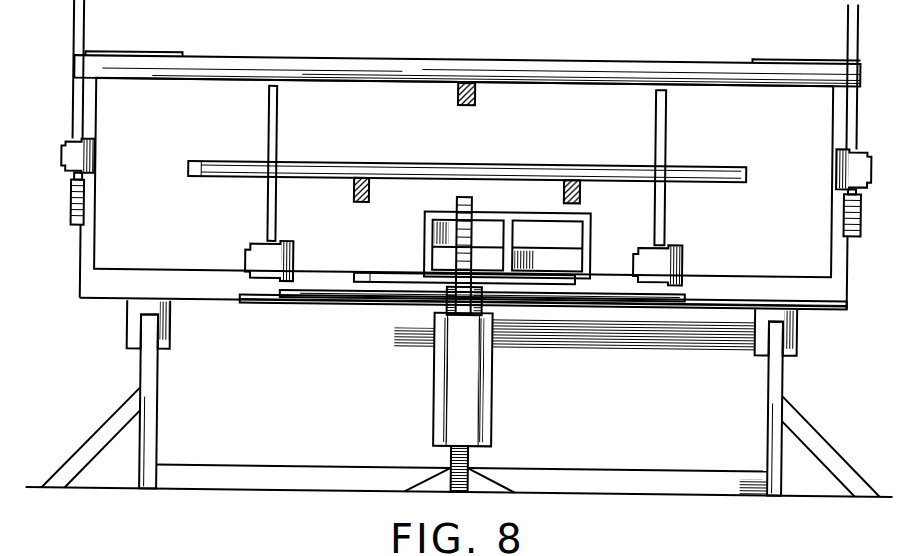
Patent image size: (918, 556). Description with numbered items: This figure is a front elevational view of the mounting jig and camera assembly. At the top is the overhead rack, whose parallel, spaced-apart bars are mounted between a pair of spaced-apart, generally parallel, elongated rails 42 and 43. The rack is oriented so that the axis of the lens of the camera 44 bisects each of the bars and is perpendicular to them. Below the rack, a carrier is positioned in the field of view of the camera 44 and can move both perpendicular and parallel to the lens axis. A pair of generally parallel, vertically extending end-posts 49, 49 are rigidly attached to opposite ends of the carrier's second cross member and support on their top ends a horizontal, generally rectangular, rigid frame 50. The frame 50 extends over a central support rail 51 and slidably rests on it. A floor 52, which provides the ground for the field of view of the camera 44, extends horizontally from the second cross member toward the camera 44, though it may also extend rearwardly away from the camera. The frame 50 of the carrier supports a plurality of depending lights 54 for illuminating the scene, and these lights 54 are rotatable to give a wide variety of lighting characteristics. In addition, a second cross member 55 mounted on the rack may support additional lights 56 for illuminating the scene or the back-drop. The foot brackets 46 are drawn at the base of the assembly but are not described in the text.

The elongated rail 42 is at (579, 198).
The elongated rail 43 is at (353, 194).
The camera 44 is at (462, 198).
The foot bracket 46 is at (170, 336).
The end-post 49 is at (72, 114).
The rigid frame 50 is at (500, 59).
The central support rail 51 is at (473, 105).
The floor 52 is at (412, 300).
The depending light 54 is at (71, 206).
The second cross member 55 is at (752, 150).
The additional light 56 is at (295, 262).